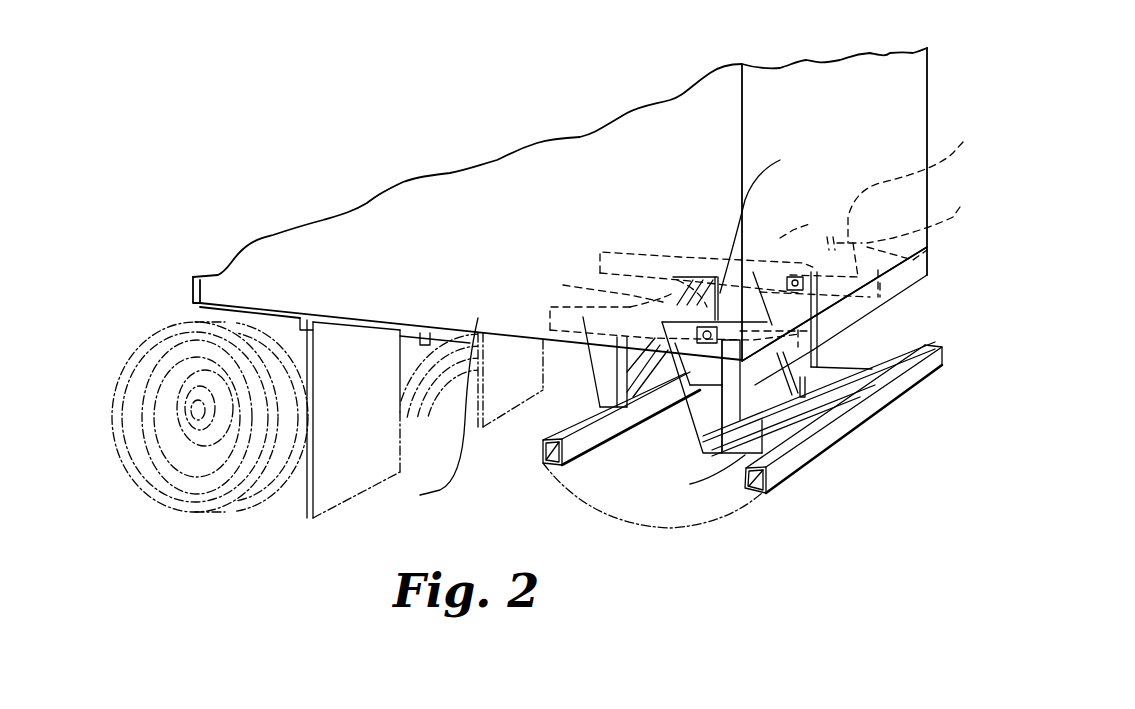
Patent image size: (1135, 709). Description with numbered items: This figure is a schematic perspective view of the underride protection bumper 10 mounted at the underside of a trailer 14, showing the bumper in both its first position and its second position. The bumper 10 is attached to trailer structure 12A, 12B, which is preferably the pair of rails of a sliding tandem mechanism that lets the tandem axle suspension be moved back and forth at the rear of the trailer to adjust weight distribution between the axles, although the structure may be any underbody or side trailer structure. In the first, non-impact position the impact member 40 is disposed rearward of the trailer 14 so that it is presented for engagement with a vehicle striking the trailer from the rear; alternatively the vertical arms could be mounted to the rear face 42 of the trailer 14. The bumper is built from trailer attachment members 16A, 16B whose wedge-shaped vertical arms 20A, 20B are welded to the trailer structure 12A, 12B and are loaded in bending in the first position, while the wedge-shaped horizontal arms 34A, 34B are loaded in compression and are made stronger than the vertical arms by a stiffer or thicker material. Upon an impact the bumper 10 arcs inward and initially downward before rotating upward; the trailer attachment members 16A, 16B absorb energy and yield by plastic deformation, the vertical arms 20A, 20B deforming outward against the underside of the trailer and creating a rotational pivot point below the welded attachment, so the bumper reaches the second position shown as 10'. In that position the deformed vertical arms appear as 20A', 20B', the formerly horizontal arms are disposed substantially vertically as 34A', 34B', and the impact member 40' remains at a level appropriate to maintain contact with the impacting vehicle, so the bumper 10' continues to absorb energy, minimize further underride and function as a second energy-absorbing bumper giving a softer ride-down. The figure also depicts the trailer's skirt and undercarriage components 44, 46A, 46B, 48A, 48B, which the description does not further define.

The underride protection bumper 10 is at (804, 519).
The bumper in second position 10' is at (507, 446).
The trailer structure 12A is at (531, 380).
The trailer structure 12B is at (921, 219).
The trailer 14 is at (928, 92).
The trailer attachment member 16A is at (700, 447).
The trailer attachment member 16B is at (840, 330).
The vertical arm 20A is at (704, 387).
The vertical arm in second position 20A' is at (669, 296).
The vertical arm 20B is at (818, 310).
The vertical arm in second position 20B' is at (830, 248).
The horizontal arm 34A is at (726, 412).
The horizontal arm in second position 34A' is at (604, 366).
The horizontal arm 34B is at (890, 320).
The horizontal arm in second position 34B' is at (748, 235).
The impact member 40 is at (843, 419).
The impact member in second position 40' is at (621, 427).
The rear face 42 is at (928, 278).
The brace member 44 is at (786, 396).
The side skirt 46A is at (432, 432).
The side skirt 46B is at (907, 182).
The diagonal brace 48A is at (818, 413).
The diagonal brace 48B is at (895, 396).